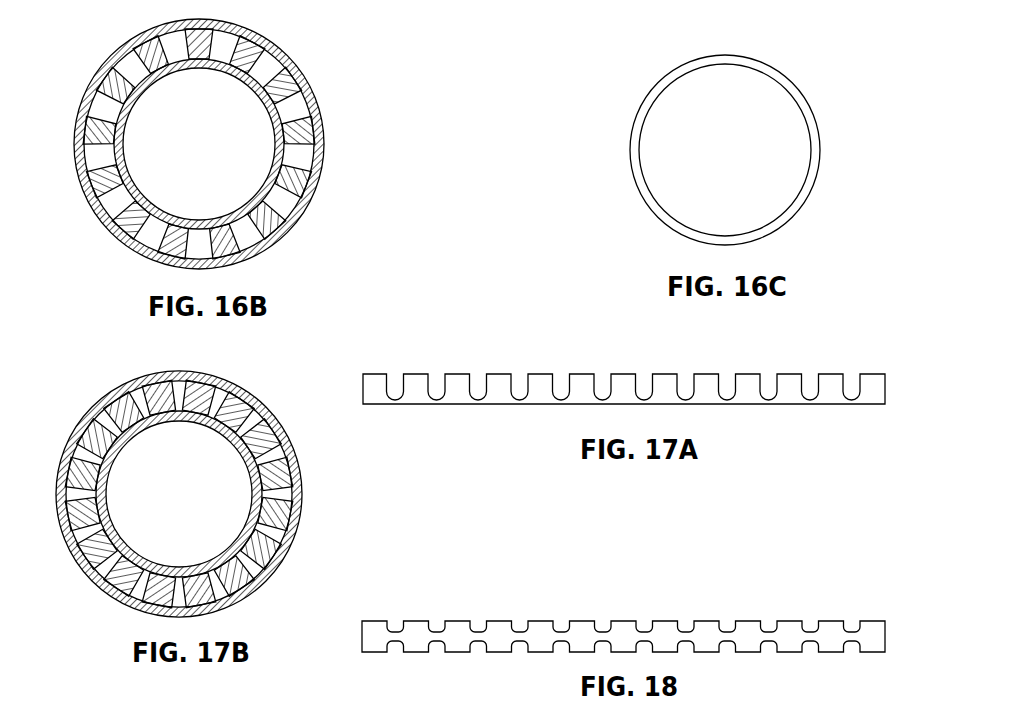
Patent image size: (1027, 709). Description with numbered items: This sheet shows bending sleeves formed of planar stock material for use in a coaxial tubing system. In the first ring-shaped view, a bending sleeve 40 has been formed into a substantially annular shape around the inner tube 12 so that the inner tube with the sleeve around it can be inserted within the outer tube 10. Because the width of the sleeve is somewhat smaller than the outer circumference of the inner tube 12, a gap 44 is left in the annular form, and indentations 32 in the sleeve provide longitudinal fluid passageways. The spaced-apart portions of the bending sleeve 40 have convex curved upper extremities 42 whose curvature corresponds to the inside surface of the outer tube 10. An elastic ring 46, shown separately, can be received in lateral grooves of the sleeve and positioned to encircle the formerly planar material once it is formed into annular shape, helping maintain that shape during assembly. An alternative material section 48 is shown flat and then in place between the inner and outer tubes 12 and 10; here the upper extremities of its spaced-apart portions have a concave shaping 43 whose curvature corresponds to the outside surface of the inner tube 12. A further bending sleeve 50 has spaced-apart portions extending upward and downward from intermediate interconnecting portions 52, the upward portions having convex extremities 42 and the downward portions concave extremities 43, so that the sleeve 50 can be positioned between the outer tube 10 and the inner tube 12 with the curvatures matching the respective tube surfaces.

In FIG. 16B, the outer tube 10 is at (100, 227).
In FIG. 17B, the outer tube 10 is at (82, 560).
In FIG. 16B, the inner tube 12 is at (128, 113).
In FIG. 17B, the inner tube 12 is at (115, 472).
In FIG. 16B, the indentations 32 is at (123, 72).
In FIG. 16B, the bending sleeve 40 is at (277, 82).
In FIG. 16B, the gap 44 is at (299, 146).
In FIG. 17B, the gap 44 is at (284, 498).
In FIG. 16C, the elastic ring 46 is at (631, 132).
In FIG. 17A, the material section 48 is at (886, 388).
In FIG. 17B, the material section 48 is at (240, 417).
In FIG. 17A, the concave shaping 43 is at (417, 374).
In FIG. 18, the concave shaping 43 is at (418, 652).
In FIG. 18, the convex curved upper extremities 42 is at (418, 621).
In FIG. 18, the bending sleeve 50 is at (886, 633).
In FIG. 18, the intermediate interconnecting portions 52 is at (560, 632).